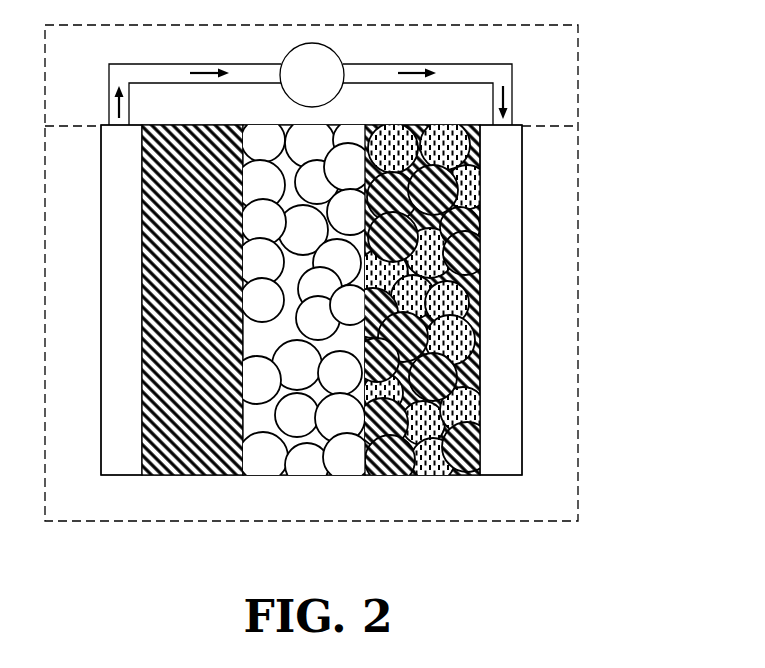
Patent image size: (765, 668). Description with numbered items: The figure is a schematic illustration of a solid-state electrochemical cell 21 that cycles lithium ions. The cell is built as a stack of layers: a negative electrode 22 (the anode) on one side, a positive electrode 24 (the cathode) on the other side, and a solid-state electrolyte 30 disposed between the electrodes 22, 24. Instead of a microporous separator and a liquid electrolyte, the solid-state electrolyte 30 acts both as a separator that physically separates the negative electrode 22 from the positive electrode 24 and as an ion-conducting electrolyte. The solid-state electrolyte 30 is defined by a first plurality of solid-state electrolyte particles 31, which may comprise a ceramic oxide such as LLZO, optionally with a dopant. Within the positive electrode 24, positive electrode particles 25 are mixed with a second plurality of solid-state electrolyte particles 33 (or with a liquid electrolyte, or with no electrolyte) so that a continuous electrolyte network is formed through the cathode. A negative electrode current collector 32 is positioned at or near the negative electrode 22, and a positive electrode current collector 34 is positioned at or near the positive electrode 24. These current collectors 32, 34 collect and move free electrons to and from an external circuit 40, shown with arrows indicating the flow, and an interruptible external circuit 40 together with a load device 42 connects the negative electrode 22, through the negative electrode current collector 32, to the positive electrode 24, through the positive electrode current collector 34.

The external circuit 40 is at (592, 70).
The load device 42 is at (312, 75).
The solid-state electrochemical cell 21 is at (592, 175).
The negative electrode 22 is at (207, 490).
The positive electrode 24 is at (455, 343).
The positive electrode particles 25 is at (483, 300).
The solid-state electrolyte 30 is at (303, 345).
The solid-state electrolyte particles 31 is at (303, 466).
The negative electrode current collector 32 is at (115, 377).
The second plurality of solid-state electrolyte particles 33 is at (472, 188).
The positive electrode current collector 34 is at (507, 378).